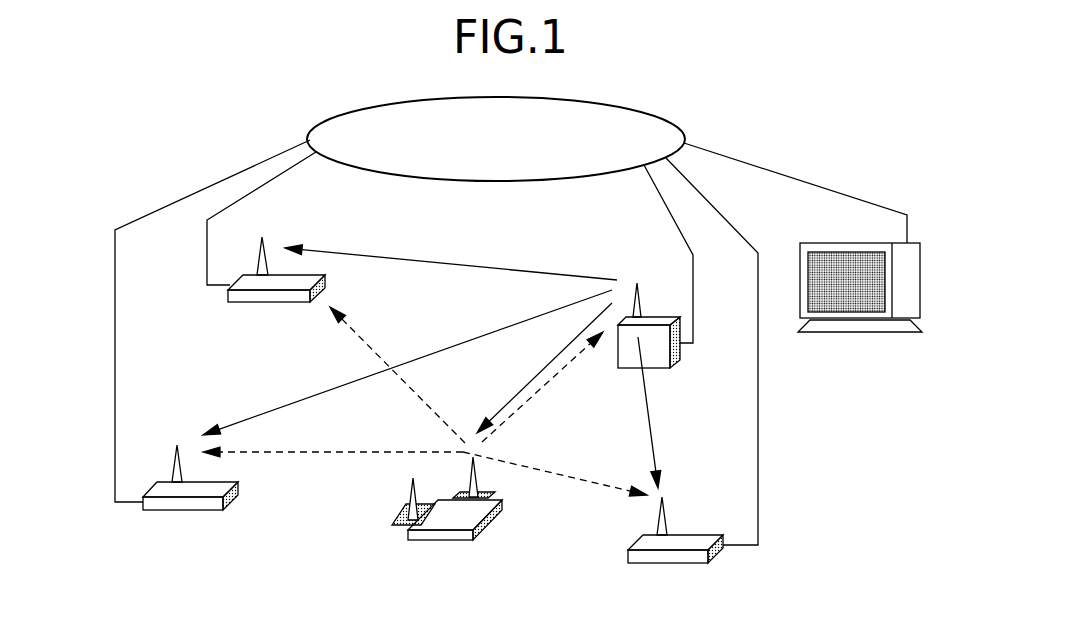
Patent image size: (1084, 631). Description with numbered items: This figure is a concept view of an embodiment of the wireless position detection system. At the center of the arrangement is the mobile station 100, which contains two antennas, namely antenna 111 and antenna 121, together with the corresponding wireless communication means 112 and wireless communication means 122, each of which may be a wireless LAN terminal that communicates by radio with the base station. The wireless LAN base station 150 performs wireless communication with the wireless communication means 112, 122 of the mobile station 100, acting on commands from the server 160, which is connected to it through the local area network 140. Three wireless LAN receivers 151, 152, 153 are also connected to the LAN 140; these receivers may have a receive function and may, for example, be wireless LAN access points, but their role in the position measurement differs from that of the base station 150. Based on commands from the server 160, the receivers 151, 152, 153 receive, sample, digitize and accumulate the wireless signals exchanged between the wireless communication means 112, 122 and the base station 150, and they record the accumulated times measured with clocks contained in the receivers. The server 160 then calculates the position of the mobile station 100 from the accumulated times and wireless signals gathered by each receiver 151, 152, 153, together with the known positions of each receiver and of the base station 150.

The mobile station 100 is at (440, 535).
The antenna 111 is at (478, 478).
The wireless communication means 112 is at (457, 495).
The antenna 121 is at (408, 499).
The wireless communication means 122 is at (402, 530).
The local area network 140 is at (492, 170).
The wireless LAN base station 150 is at (677, 363).
The wireless LAN receiver 151 is at (668, 557).
The wireless LAN receiver 152 is at (183, 503).
The wireless LAN receiver 153 is at (270, 297).
The server 160 is at (860, 327).